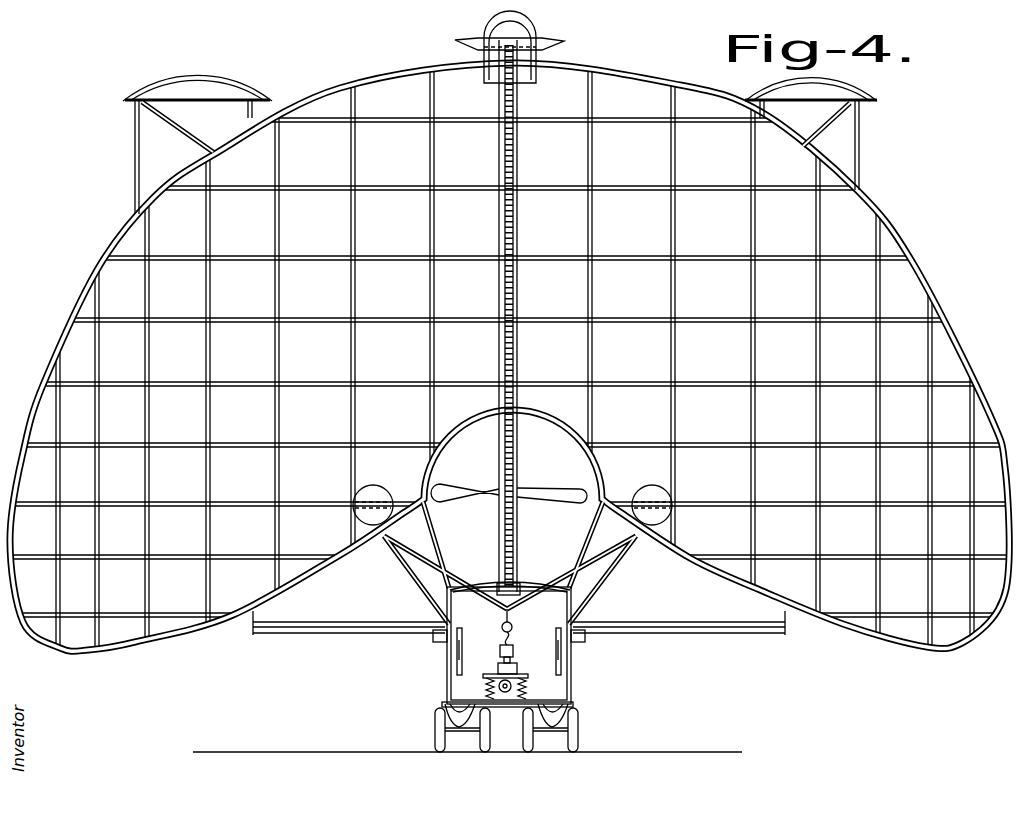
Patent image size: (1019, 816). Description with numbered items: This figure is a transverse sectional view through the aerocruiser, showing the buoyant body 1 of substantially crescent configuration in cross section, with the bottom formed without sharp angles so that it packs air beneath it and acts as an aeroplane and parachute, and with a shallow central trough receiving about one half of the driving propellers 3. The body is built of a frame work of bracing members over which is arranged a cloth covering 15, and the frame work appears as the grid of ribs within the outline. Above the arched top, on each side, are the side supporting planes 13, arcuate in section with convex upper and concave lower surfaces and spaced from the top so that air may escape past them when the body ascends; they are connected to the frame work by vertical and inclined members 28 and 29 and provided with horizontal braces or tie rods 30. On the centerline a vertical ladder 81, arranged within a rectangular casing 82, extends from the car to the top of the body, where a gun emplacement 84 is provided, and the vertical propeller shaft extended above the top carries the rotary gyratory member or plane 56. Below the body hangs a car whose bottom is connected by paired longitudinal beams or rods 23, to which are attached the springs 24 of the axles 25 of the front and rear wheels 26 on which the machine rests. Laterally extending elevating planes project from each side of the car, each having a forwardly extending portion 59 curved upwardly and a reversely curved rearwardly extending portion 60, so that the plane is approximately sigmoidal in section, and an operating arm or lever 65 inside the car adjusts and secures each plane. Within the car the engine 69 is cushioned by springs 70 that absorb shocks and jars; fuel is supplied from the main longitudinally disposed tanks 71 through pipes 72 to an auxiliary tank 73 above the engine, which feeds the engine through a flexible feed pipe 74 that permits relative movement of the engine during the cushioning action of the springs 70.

The buoyant body 1 is at (996, 412).
The driving propellers 3 is at (554, 501).
The side supporting planes 13 is at (150, 83).
The covering 15 is at (509, 408).
The longitudinal beams or rods 23 is at (473, 704).
The springs 24 is at (466, 706).
The axles 25 is at (450, 733).
The wheel 26 is at (528, 727).
The vertical members 28 is at (135, 150).
The inclined members 29 is at (185, 142).
The horizontal braces or tie rods 30 is at (165, 114).
The rotary gyratory member or plane 56 is at (564, 45).
The forwardly extending portions 59 is at (372, 617).
The rearwardly extending portion 60 is at (306, 639).
The operating arm or lever 65 is at (462, 672).
The engines 69 is at (483, 685).
The springs 70 is at (500, 665).
The main tanks 71 is at (378, 490).
The pipes 72 is at (453, 579).
The auxiliary tanks 73 is at (502, 627).
The flexible feed pipes 74 is at (515, 640).
The vertical ladder 81 is at (516, 251).
The casing 82 is at (520, 301).
The gun emplacements 84 is at (538, 26).